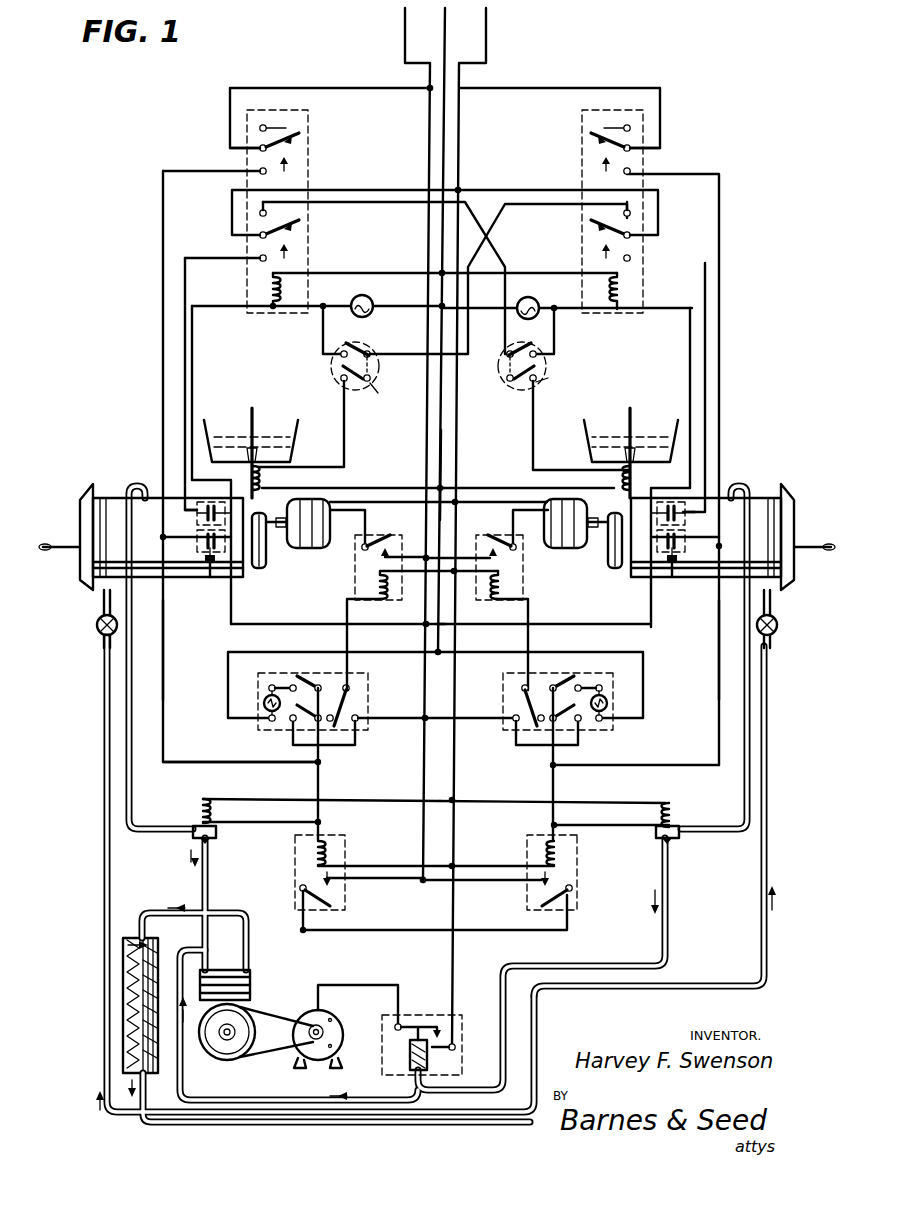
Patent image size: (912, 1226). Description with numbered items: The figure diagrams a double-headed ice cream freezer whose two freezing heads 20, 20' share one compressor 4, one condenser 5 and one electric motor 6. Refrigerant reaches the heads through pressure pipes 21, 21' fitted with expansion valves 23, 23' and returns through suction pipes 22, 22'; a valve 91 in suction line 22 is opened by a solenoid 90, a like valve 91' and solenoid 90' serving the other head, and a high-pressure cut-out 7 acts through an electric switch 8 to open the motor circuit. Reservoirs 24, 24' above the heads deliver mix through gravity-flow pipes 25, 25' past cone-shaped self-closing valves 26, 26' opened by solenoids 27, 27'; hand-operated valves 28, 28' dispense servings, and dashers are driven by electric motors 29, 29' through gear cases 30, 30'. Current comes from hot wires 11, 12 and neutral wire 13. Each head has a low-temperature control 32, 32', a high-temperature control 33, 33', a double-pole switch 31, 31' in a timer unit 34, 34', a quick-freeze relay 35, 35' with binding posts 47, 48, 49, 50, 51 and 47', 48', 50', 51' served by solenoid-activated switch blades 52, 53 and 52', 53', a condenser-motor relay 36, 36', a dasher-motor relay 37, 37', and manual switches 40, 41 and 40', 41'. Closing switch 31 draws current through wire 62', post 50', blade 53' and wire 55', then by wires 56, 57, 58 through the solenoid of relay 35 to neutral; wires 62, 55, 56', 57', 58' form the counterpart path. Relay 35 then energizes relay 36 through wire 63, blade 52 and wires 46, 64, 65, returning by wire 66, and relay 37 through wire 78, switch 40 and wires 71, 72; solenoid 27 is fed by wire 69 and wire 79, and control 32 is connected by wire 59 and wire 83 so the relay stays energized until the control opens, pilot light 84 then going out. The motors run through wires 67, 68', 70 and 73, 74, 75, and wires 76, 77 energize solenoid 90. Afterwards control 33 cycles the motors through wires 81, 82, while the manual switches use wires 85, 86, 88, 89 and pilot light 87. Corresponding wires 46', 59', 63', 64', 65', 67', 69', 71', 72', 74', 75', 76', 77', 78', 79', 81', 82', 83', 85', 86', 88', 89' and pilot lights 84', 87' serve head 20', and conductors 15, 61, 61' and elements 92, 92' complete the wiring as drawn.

The compressor 4 is at (257, 995).
The condenser 5 is at (118, 956).
The electric motor 6 is at (342, 1030).
The high-pressure cut-out 7 is at (405, 1081).
The electric switch 8 is at (428, 1020).
The hot wire 11 is at (487, 38).
The hot wire 12 is at (404, 46).
The neutral wire 13 is at (446, 36).
The common line 15 is at (460, 492).
The freezing head 20 is at (725, 532).
The freezing head 20' is at (147, 532).
The pressure pipe 21 is at (665, 821).
The pressure pipe 21' is at (320, 874).
The suction pipe 22 is at (582, 788).
The suction pipe 22' is at (167, 728).
The expansion valve 23 is at (784, 619).
The expansion valve 23' is at (83, 619).
The reservoir 24 is at (612, 442).
The reservoir 24' is at (272, 441).
The gravity-flow pipe 25 is at (576, 519).
The gravity-flow pipe 25' is at (299, 517).
The cone-shaped self-closing valve 26 is at (643, 452).
The cone-shaped self-closing valve 26' is at (266, 449).
The solenoid 27 is at (646, 478).
The solenoid 27' is at (272, 478).
The dispensing valve 28 is at (814, 534).
The dispensing valve 28' is at (59, 534).
The dasher motor 29 is at (590, 547).
The dasher motor 29' is at (288, 548).
The gear case 30 is at (610, 553).
The gear case 30' is at (266, 553).
The double-pole manually-closed switch 31 is at (542, 379).
The double-pole manually-closed switch 31' is at (379, 392).
The temperature control 32 is at (680, 520).
The temperature control 32' is at (208, 504).
The temperature control 33 is at (683, 547).
The temperature control 33' is at (197, 535).
The timer unit 34 is at (514, 378).
The timer unit 34' is at (338, 368).
The quick-freeze relay 35 is at (595, 211).
The quick-freeze relay 35' is at (286, 222).
The condenser-motor relay 36 is at (573, 872).
The condenser-motor relay 36' is at (335, 869).
The dasher-motor relay 37 is at (515, 567).
The dasher-motor relay 37' is at (358, 567).
The single-pole switch 40 is at (514, 698).
The single-pole switch 40' is at (300, 464).
The double-pole switch 41 is at (558, 692).
The double-pole switch 41' is at (313, 692).
The wire 46 is at (688, 469).
The wire 46' is at (226, 466).
The binding post 47 is at (658, 145).
The binding post 47' is at (232, 141).
The binding post 48 is at (646, 167).
The binding post 48' is at (225, 163).
The binding post 49 is at (632, 216).
The binding post 50 is at (657, 226).
The binding post 50' is at (235, 242).
The binding post 51 is at (639, 251).
The binding post 51' is at (236, 260).
The switch blade 52 is at (595, 144).
The switch blade 52' is at (296, 142).
The switch blade 53 is at (593, 234).
The switch blade 53' is at (300, 233).
The wire 55 is at (498, 279).
The wire 55' is at (386, 278).
The wire 56 is at (550, 333).
The wire 56' is at (329, 331).
The wire 57 is at (589, 306).
The wire 57' is at (310, 291).
The wire 58 is at (530, 262).
The wire 58' is at (358, 262).
The wire 59 is at (670, 467).
The wire 59' is at (211, 465).
The conductor 61 is at (719, 387).
The conductor 61' is at (206, 384).
The wire 62 is at (558, 199).
The wire 62' is at (345, 199).
The wire 63 is at (560, 104).
The wire 63' is at (330, 107).
The wire 64 is at (703, 661).
The wire 64' is at (179, 650).
The wire 65 is at (569, 764).
The wire 65' is at (334, 764).
The wire 66 is at (484, 866).
The wire 67 is at (482, 892).
The wire 67' is at (375, 892).
The wire 68' is at (433, 923).
The wire 69 is at (581, 425).
The wire 69' is at (316, 424).
The wire 70 is at (388, 984).
The wire 71 is at (530, 643).
The wire 71' is at (346, 644).
The wire 72 is at (476, 593).
The wire 72' is at (417, 585).
The wire 73 is at (470, 548).
The wire 74 is at (516, 530).
The wire 74' is at (362, 530).
The wire 75 is at (406, 547).
The wire 75' is at (438, 512).
The wire 76 is at (610, 832).
The wire 76' is at (262, 836).
The wire 77 is at (552, 789).
The wire 77' is at (321, 791).
The wire 78 is at (634, 773).
The wire 78' is at (259, 758).
The wire 79 is at (529, 474).
The wire 79' is at (353, 474).
The wire 81 is at (554, 620).
The wire 81' is at (338, 612).
The wire 82 is at (695, 542).
The wire 82' is at (197, 549).
The wire 83 is at (567, 321).
The wire 83' is at (317, 318).
The pilot light 84 is at (525, 298).
The pilot light 84' is at (375, 297).
The wire 85 is at (469, 705).
The wire 85' is at (393, 733).
The wire 86 is at (543, 742).
The wire 86' is at (302, 734).
The pilot light 87 is at (614, 702).
The pilot light 87' is at (254, 703).
The wire 88 is at (599, 673).
The wire 88' is at (270, 673).
The wire 89 is at (558, 685).
The wire 89' is at (333, 674).
The solenoid 90 is at (686, 815).
The solenoid 90' is at (189, 811).
The valve 91 is at (680, 850).
The valve 91' is at (210, 812).
The contact 92 is at (662, 581).
The contact 92' is at (210, 581).